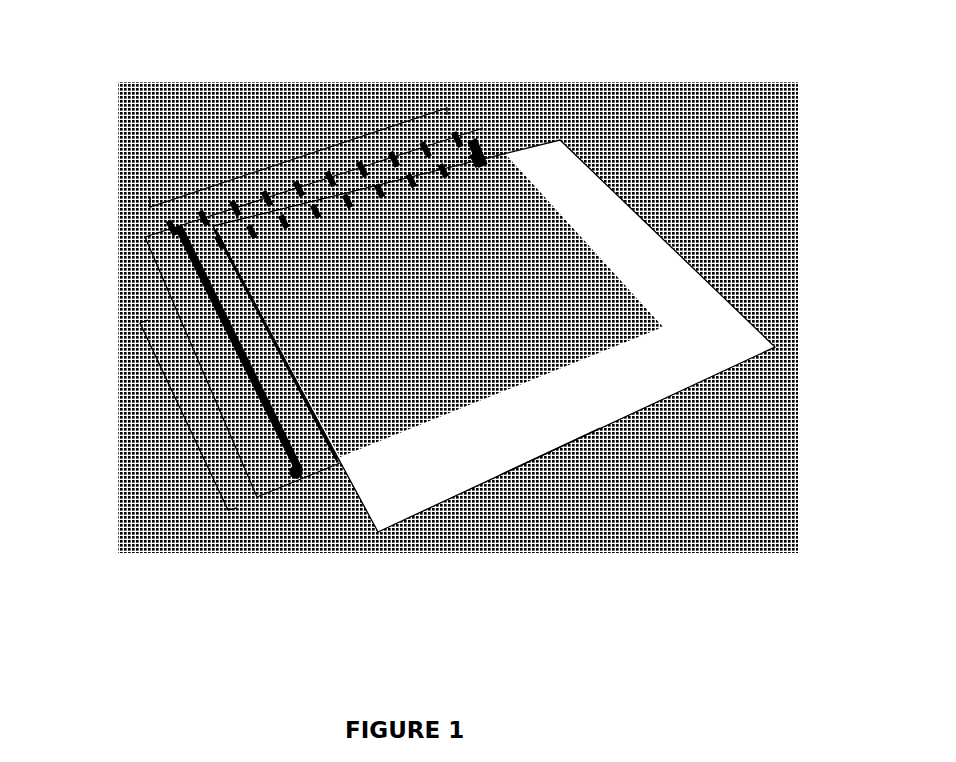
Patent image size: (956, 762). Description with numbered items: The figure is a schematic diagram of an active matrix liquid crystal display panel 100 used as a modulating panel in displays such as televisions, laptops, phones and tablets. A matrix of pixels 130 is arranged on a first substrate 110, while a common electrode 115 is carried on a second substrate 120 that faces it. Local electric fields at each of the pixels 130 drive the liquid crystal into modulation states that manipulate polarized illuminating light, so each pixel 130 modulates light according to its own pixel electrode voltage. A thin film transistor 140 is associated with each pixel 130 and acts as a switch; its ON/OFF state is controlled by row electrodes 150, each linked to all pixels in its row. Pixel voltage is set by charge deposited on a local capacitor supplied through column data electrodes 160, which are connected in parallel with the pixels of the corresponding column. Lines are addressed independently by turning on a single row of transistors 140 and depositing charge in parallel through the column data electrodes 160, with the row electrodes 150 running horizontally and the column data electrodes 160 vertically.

The active matrix liquid crystal display panel 100 is at (145, 648).
The first substrate 110 is at (488, 128).
The common electrode 115 is at (567, 509).
The second substrate 120 is at (668, 372).
The pixels 130 is at (195, 305).
The thin film transistor 140 is at (296, 476).
The row electrodes 150 is at (188, 425).
The column data electrodes 160 is at (295, 152).